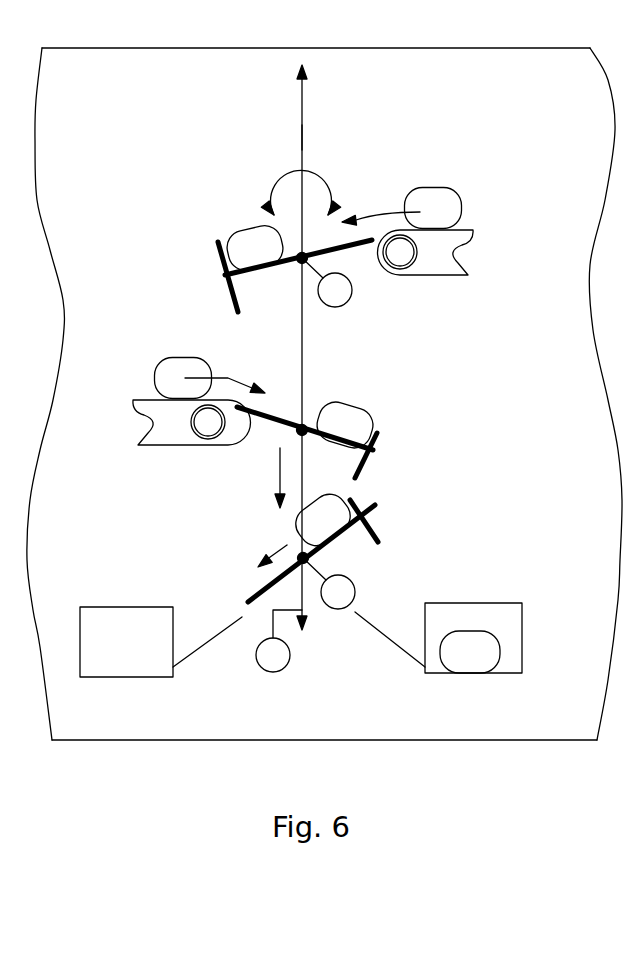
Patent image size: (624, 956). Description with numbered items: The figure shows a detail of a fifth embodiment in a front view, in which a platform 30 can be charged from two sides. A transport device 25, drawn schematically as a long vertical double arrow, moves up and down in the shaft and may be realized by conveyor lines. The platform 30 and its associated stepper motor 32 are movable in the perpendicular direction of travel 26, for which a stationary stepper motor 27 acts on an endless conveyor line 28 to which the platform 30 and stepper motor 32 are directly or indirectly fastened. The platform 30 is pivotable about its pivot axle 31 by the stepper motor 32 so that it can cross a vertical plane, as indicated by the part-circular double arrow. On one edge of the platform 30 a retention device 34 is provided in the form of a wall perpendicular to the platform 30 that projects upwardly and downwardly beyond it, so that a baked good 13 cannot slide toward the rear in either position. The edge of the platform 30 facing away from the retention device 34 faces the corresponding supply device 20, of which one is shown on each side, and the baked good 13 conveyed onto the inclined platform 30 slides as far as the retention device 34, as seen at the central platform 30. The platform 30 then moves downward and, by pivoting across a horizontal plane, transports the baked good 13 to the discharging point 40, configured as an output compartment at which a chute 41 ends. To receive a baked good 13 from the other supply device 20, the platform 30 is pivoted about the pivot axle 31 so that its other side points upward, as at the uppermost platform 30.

The loaf of bread 13 is at (252, 248).
The supply device 20 is at (437, 267).
The transport device 25 is at (305, 118).
The double arrow 26 is at (274, 474).
The stepper motor 27 is at (290, 652).
The endless conveyor line 28 is at (300, 137).
The platform 30 is at (355, 253).
The pivot axle 31 is at (300, 260).
The stepper motor 32 is at (321, 306).
The retention device 34 is at (222, 272).
The discharging point 40 is at (102, 625).
The chute 41 is at (197, 653).